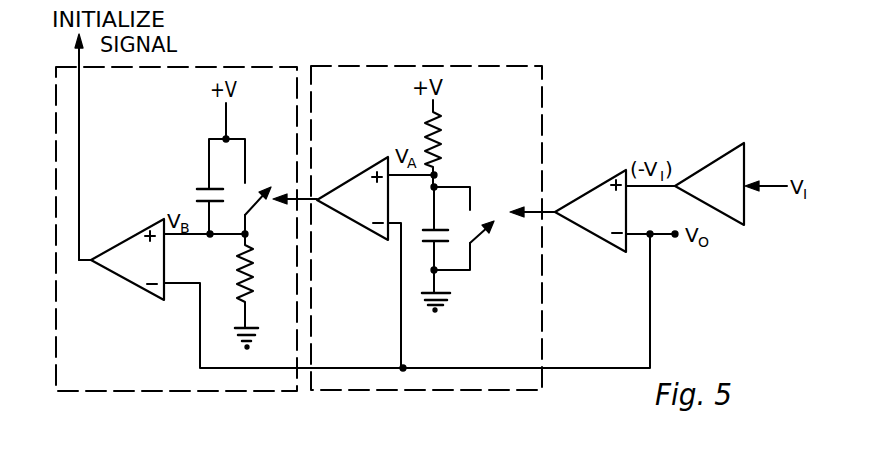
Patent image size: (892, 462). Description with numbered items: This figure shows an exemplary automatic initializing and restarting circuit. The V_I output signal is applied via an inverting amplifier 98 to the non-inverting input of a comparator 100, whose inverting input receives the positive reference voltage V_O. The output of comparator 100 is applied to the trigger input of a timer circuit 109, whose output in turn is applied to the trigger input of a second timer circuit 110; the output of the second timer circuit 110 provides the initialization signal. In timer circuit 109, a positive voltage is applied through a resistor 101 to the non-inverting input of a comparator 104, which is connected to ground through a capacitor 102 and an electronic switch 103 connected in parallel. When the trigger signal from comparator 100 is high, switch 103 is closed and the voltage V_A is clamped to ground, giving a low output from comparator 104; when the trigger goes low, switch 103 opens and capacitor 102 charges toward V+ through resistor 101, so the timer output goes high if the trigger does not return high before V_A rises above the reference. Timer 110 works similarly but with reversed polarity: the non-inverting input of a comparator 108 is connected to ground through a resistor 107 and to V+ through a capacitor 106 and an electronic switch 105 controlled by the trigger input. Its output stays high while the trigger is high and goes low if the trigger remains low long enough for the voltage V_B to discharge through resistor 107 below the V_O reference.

The inverting amplifier 98 is at (713, 162).
The comparator 100 is at (585, 202).
The resistor 101 is at (445, 142).
The capacitor 102 is at (423, 232).
The electronic switch 103 is at (478, 246).
The comparator 104 is at (350, 177).
The electronic switch 105 is at (279, 194).
The capacitor 106 is at (197, 190).
The resistor 107 is at (252, 277).
The comparator 108 is at (121, 270).
The timer circuit 109 is at (427, 254).
The second timer circuit 110 is at (176, 255).